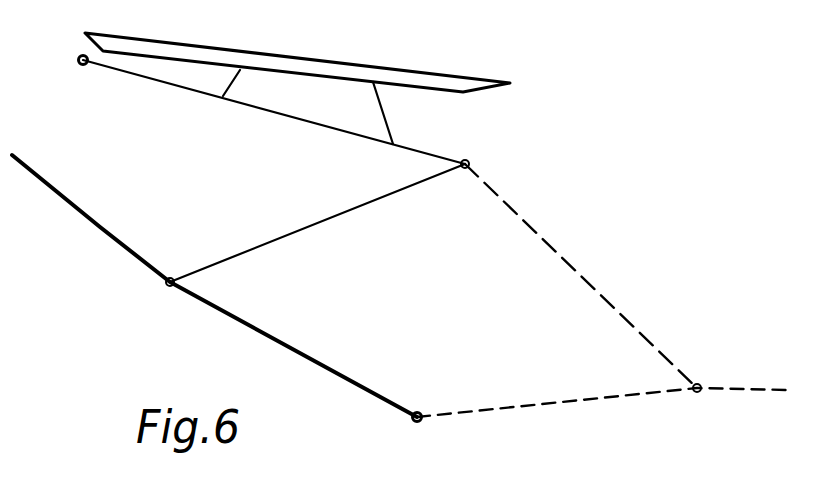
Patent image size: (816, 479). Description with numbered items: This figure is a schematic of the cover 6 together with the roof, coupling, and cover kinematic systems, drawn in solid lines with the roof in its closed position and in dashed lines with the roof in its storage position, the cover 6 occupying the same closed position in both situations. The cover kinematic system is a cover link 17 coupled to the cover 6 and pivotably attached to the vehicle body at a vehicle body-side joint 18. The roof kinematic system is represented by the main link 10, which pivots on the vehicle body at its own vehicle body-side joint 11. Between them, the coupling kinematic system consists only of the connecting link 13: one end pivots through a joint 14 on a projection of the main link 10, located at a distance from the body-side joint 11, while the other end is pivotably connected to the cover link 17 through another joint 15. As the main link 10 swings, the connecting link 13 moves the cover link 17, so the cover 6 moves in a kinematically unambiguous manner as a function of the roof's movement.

The cover 6 is at (313, 63).
The main link 10 is at (278, 340).
The vehicle body-side joint 11 is at (421, 413).
The connecting link 13 is at (318, 222).
The joint 14 is at (173, 276).
The joint 15 is at (469, 160).
The cover link 17 is at (290, 118).
The vehicle body-side joint 18 is at (83, 65).